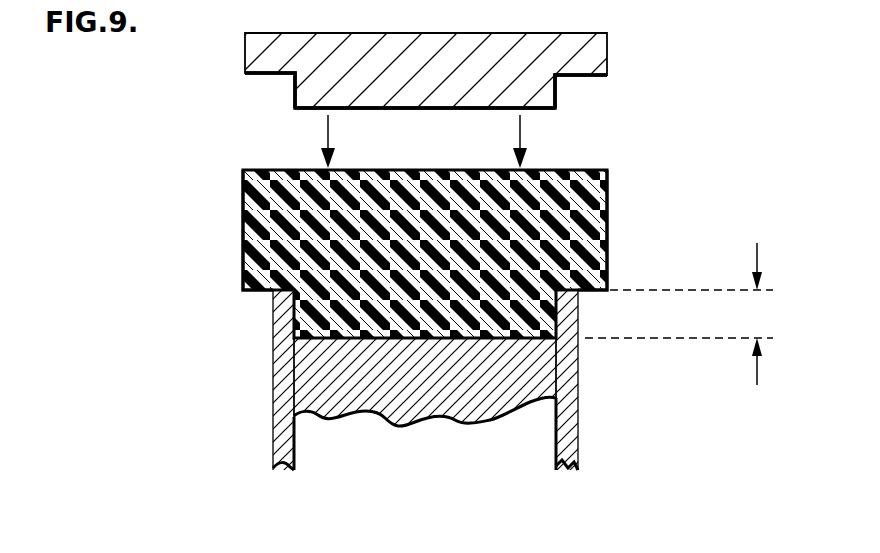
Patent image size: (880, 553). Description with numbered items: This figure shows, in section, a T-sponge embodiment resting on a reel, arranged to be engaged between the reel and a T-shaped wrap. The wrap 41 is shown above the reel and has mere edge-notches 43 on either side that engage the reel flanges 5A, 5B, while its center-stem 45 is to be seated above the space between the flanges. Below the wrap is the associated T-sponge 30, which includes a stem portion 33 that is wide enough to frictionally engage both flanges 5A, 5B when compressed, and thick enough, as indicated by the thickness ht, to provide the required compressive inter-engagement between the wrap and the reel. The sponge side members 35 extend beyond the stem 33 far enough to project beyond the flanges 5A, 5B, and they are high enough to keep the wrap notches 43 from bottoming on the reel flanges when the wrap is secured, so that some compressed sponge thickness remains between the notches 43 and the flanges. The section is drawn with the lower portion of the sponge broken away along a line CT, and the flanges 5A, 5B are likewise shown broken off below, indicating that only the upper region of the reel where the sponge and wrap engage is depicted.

The T-shaped wrap 41 is at (607, 35).
The edge-notches 43 is at (282, 80).
The center-stem 45 is at (455, 102).
The sponge side members 35 is at (258, 292).
The stem portion 33 is at (440, 333).
The T-sponge 30 is at (475, 348).
The flange 5A is at (264, 442).
The flange 5B is at (588, 451).
The cut line CT is at (362, 426).
The thickness ht is at (679, 314).